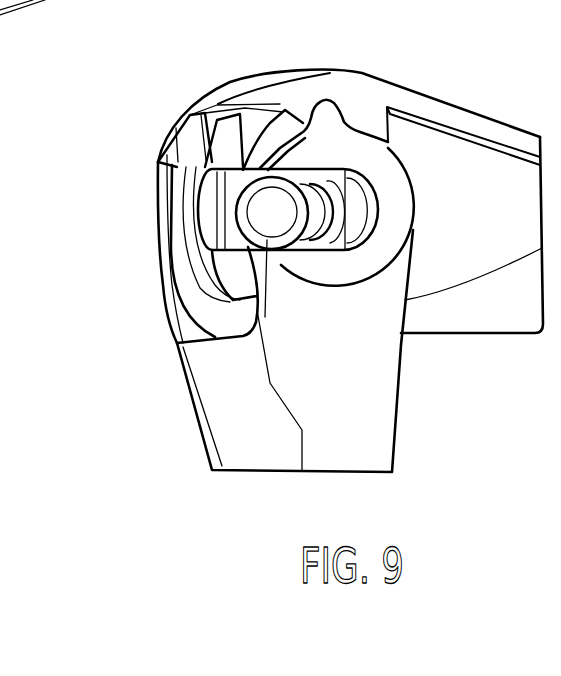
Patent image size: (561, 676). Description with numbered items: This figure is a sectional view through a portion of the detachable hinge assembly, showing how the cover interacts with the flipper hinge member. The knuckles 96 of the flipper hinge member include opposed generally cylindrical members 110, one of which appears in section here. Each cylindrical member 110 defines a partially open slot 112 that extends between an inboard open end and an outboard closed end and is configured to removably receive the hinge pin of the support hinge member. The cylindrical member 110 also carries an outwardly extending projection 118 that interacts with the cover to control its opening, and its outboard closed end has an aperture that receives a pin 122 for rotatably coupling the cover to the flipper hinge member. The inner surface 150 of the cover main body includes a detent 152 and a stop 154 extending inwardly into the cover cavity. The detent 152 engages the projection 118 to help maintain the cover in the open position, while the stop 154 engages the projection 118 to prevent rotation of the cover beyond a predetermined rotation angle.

The knuckles 96 is at (368, 296).
The cylindrical member 110 is at (382, 273).
The partially open slot 112 is at (333, 218).
The projection 118 is at (328, 100).
The pin 122 is at (255, 210).
The inner surface 150 is at (488, 163).
The detent 152 is at (293, 112).
The stop 154 is at (373, 110).